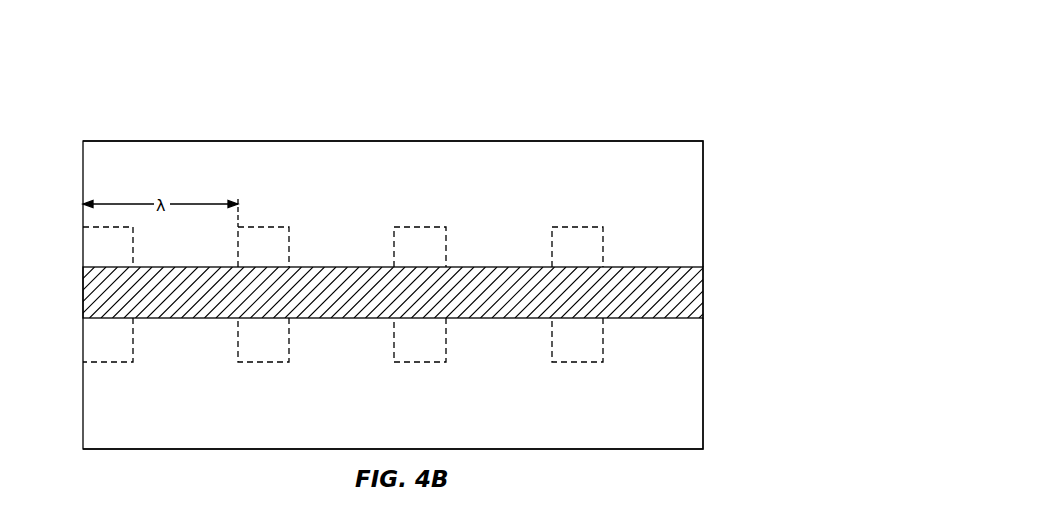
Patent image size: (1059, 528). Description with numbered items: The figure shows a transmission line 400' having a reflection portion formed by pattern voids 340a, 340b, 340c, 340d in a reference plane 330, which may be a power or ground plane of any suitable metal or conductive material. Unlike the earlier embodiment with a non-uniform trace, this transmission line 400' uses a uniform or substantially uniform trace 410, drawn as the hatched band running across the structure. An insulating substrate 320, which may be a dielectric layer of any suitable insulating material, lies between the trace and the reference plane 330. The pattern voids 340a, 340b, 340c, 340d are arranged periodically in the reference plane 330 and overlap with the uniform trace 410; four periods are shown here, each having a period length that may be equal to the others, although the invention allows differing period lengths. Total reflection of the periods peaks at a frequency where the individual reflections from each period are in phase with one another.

The transmission line 400' is at (415, 270).
The uniform trace 410 is at (83, 293).
The insulating substrate 320 is at (697, 423).
The reference plane 330 is at (703, 438).
The pattern void 340a is at (107, 362).
The pattern void 340b is at (263, 363).
The pattern void 340c is at (419, 363).
The pattern void 340d is at (575, 363).